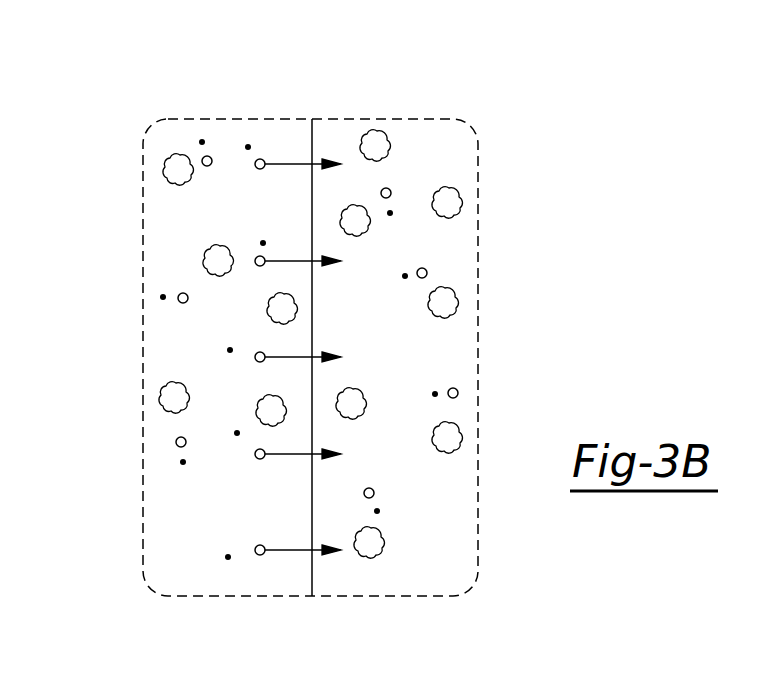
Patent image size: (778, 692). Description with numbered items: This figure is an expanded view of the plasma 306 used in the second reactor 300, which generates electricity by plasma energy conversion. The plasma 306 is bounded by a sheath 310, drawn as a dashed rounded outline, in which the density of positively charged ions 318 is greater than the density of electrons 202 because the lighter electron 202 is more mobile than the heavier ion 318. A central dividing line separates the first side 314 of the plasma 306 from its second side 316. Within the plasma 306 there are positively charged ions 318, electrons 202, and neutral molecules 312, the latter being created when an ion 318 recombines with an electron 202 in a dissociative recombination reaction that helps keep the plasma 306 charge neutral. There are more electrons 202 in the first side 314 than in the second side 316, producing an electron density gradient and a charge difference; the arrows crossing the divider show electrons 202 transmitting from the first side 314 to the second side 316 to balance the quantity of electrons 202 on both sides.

The second reactor 300 is at (552, 126).
The plasma 306 is at (340, 133).
The sheath 310 is at (159, 112).
The neutral molecule 312 is at (163, 392).
The first side 314 is at (192, 397).
The second side 316 is at (400, 568).
The positively charged ion 318 is at (163, 297).
The electron 202 is at (177, 446).